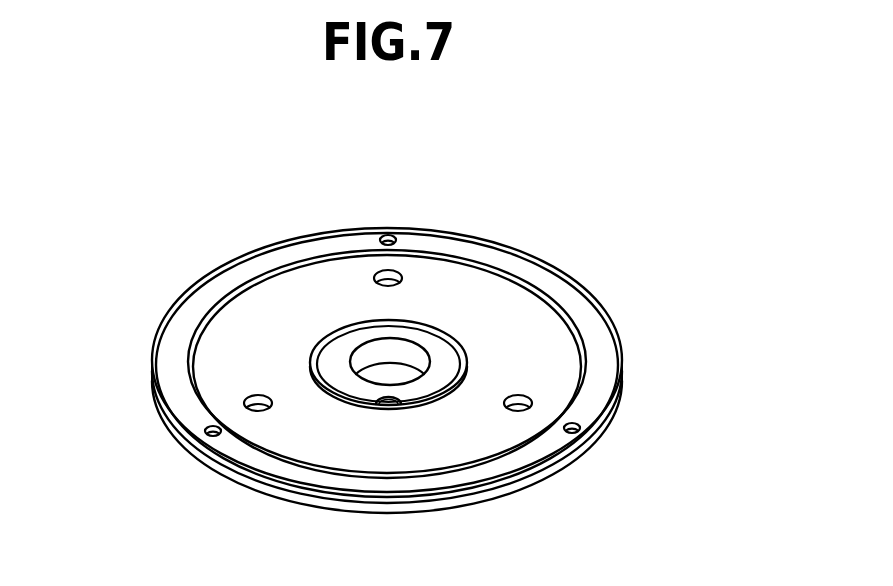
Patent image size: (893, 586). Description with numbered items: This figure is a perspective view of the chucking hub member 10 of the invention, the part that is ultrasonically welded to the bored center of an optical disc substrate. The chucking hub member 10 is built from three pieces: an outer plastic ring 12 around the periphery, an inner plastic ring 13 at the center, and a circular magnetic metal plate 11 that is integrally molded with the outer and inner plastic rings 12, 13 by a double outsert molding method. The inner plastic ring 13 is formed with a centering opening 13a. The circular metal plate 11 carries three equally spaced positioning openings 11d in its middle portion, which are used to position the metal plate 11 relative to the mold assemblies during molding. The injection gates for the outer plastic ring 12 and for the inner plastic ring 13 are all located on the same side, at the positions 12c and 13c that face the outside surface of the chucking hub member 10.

The chucking hub member 10 is at (614, 308).
The circular magnetic metal plate 11 is at (247, 322).
The positioning openings 11d is at (375, 272).
The outer plastic ring 12 is at (173, 358).
The injection gate positions for the outer plastic ring 12c is at (390, 236).
The inner plastic ring 13 is at (443, 357).
The centering opening 13a is at (404, 355).
The injection gate position for the inner plastic ring 13c is at (387, 403).